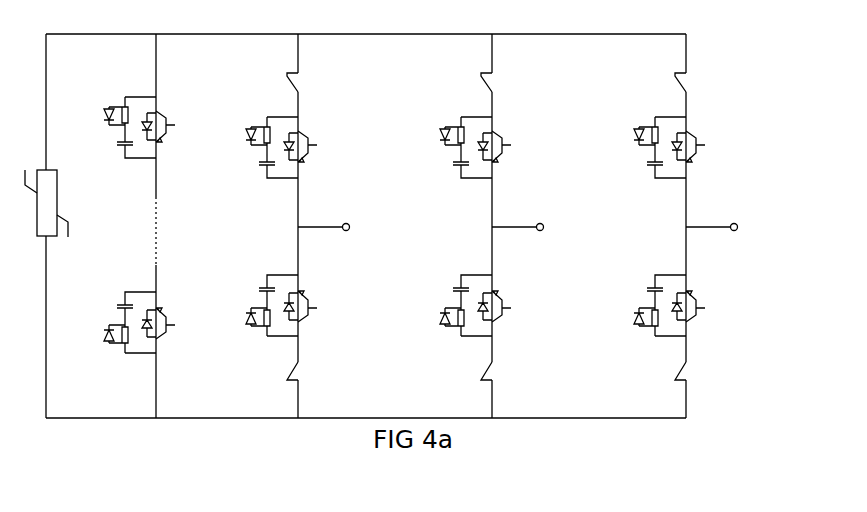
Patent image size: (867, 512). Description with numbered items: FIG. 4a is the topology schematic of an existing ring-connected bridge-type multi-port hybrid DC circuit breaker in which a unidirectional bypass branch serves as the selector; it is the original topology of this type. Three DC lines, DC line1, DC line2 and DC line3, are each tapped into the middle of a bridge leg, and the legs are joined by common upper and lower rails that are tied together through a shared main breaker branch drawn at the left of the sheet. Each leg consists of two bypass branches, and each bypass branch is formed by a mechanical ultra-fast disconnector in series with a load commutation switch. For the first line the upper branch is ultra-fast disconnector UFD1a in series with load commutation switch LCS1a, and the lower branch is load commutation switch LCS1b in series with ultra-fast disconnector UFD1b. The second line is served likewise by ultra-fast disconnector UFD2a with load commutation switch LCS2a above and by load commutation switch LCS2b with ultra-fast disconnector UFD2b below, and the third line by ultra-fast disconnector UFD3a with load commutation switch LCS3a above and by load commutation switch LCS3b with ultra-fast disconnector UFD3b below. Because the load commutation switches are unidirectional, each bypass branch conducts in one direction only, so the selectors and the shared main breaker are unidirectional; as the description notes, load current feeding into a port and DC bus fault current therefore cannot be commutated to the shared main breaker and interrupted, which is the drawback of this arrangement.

The ultra-fast disconnector UFD1a is at (340, 88).
The load commutation switch LCS1a is at (319, 147).
The DC line DC line1 is at (351, 242).
The load commutation switch LCS1b is at (321, 305).
The ultra-fast disconnector UFD1b is at (343, 374).
The ultra-fast disconnector UFD2a is at (534, 88).
The load commutation switch LCS2a is at (513, 147).
The DC line DC line2 is at (545, 242).
The load commutation switch LCS2b is at (515, 305).
The ultra-fast disconnector UFD2b is at (537, 374).
The ultra-fast disconnector UFD3a is at (728, 88).
The load commutation switch LCS3a is at (707, 147).
The DC line DC line3 is at (739, 242).
The load commutation switch LCS3b is at (710, 305).
The ultra-fast disconnector UFD3b is at (732, 374).